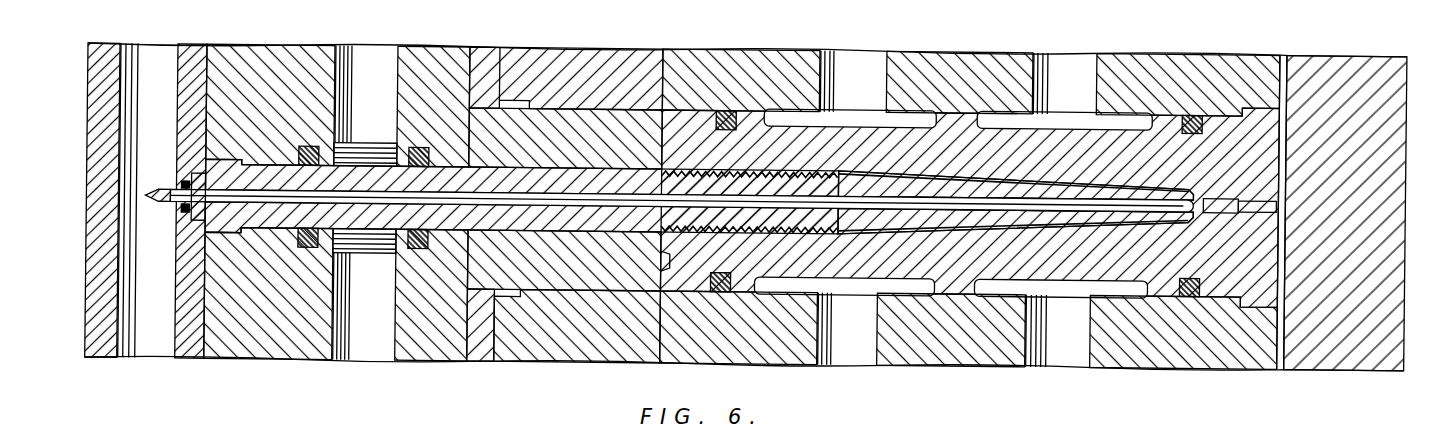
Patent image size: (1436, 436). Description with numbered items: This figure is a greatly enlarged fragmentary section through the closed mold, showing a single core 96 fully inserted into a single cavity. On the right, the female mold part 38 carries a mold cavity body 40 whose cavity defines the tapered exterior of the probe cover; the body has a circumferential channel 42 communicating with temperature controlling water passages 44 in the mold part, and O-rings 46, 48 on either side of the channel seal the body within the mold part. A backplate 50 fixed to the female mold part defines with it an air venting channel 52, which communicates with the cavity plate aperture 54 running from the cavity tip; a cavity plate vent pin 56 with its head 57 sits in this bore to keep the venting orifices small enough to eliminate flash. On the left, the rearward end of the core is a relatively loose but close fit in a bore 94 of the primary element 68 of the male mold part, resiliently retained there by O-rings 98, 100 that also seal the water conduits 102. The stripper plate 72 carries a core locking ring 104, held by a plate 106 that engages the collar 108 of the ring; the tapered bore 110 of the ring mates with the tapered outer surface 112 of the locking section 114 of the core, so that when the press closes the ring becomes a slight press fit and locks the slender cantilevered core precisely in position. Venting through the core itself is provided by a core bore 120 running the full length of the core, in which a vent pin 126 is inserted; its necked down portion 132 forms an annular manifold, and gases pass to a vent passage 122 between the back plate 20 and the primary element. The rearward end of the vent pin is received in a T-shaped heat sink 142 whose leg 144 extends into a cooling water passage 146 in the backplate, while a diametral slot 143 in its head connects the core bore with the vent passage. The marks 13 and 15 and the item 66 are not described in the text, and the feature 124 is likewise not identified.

The cooling water passage 146 is at (157, 54).
The fixed support 20 is at (188, 358).
The section line 13 is at (243, 119).
The O-ring 98 is at (316, 146).
The bore 94 is at (256, 163).
The leg 144 is at (180, 186).
The diametral slot 143 is at (208, 214).
The heat sink 142 is at (188, 218).
The vent passage 122 is at (207, 324).
The primary element 68 is at (256, 358).
The water conduit 102 is at (354, 358).
The core 96 is at (363, 250).
The O-ring 100 is at (422, 246).
The plate 106 is at (472, 358).
The stripper plate 72 is at (570, 357).
The collar 108 is at (530, 96).
The core locking ring 104 is at (610, 104).
The tapered bore 110 is at (496, 165).
The tapered outer surface 112 is at (513, 226).
The locking section 114 is at (590, 226).
The tab 66 is at (670, 258).
The circumferential channel 42 is at (778, 104).
The mold cavity body 40 is at (907, 284).
The O-ring 46 is at (716, 286).
The O-ring 48 is at (1190, 287).
The water passage 44 is at (853, 358).
The female mold part 38 is at (1138, 360).
The backplate 50 is at (1318, 362).
The air venting channel 52 is at (1283, 226).
The vent pin 126 is at (846, 180).
The core bore 120 is at (925, 186).
The sleeve segment 124 is at (1006, 190).
The necked down portion 132 is at (1187, 208).
The head 57 is at (1214, 190).
The cavity plate aperture 54 is at (1263, 193).
The cavity plate vent pin 56 is at (1248, 202).
The section arrow 15 is at (977, 418).